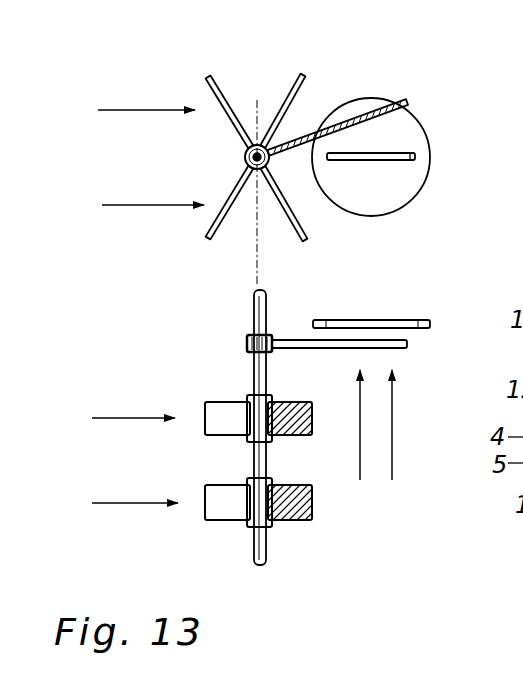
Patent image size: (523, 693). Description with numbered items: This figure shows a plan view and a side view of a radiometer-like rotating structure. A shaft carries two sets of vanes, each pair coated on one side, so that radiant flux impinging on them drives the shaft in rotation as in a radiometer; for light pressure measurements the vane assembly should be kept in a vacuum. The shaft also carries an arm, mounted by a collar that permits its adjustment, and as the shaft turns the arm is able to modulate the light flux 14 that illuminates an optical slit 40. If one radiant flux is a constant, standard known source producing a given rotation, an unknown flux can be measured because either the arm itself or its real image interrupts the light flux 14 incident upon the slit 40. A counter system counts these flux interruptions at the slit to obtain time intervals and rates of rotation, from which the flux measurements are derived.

The light flux 14 is at (360, 478).
The optical slit 40 is at (415, 157).